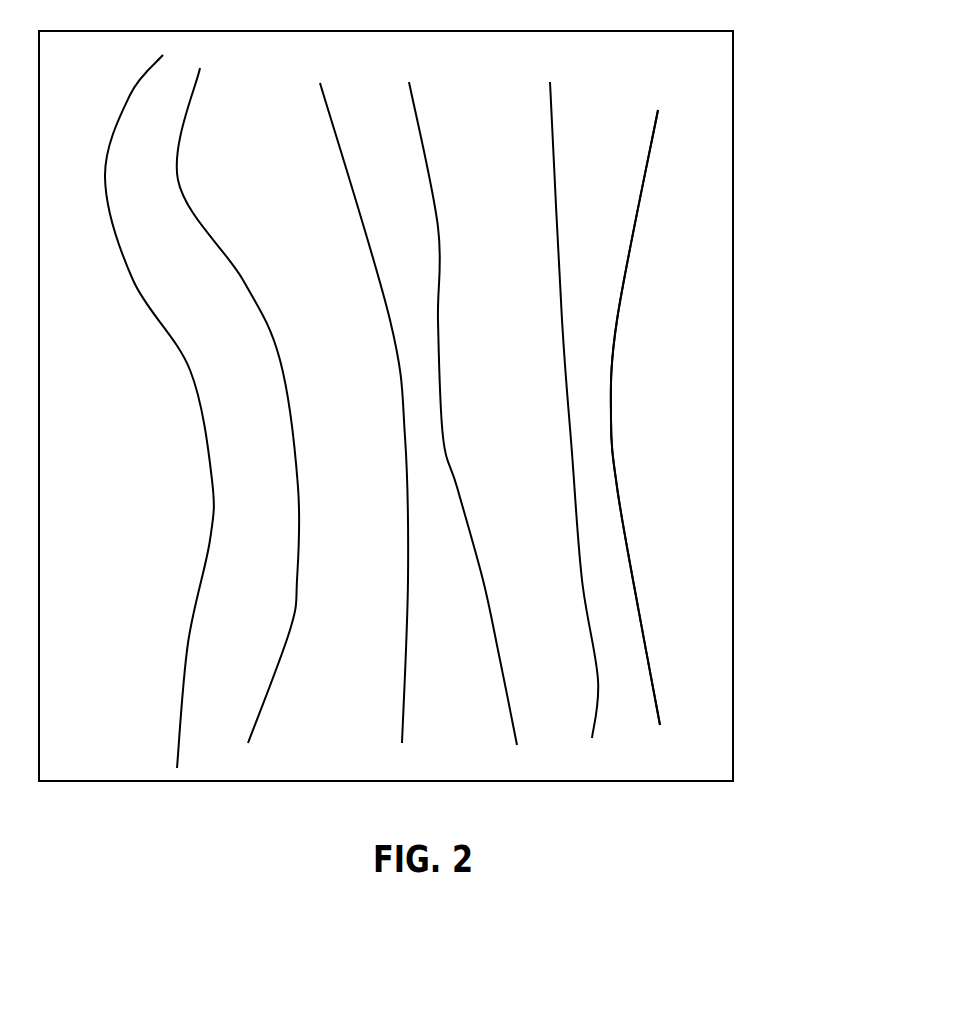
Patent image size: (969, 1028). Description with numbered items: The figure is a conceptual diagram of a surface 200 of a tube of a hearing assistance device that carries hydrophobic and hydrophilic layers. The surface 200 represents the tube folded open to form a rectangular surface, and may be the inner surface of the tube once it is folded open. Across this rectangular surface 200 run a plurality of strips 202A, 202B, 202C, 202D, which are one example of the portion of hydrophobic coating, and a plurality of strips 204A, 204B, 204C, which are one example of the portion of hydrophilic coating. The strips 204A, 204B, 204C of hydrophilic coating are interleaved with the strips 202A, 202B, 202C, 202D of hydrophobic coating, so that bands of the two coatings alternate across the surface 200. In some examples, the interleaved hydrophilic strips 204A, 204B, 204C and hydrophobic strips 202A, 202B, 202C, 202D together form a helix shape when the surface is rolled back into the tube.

The surface 200 is at (733, 127).
The strip 202A is at (85, 452).
The strip 202B is at (283, 308).
The strip 202C is at (453, 322).
The strip 202D is at (618, 407).
The strip 204A is at (179, 132).
The strip 204B is at (405, 127).
The strip 204C is at (623, 227).